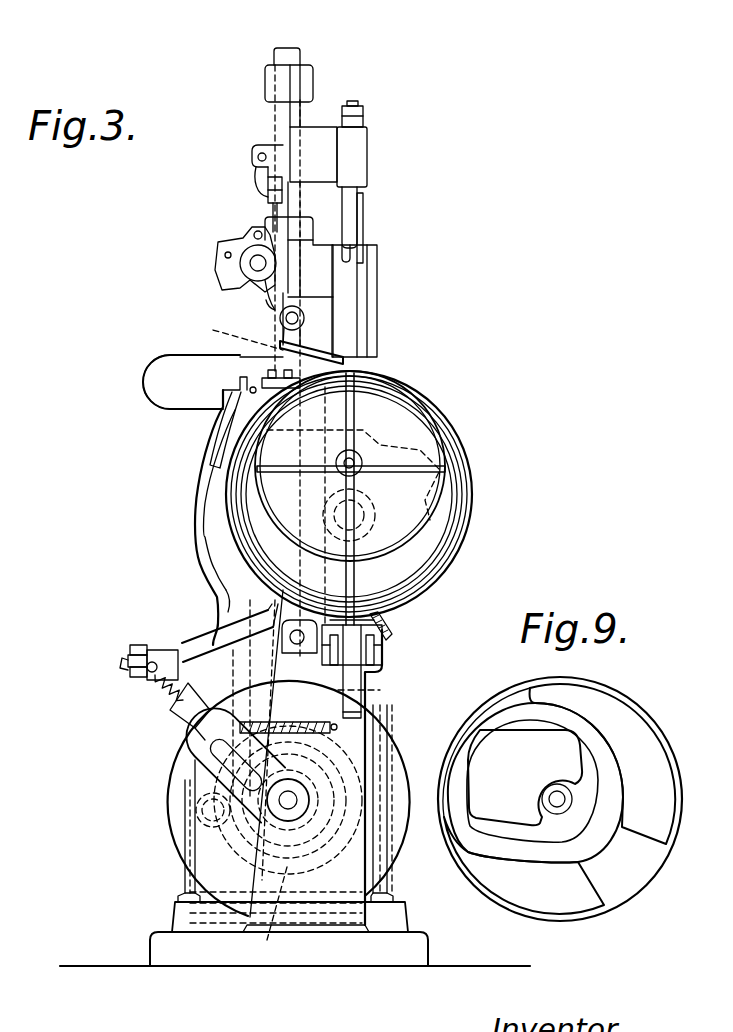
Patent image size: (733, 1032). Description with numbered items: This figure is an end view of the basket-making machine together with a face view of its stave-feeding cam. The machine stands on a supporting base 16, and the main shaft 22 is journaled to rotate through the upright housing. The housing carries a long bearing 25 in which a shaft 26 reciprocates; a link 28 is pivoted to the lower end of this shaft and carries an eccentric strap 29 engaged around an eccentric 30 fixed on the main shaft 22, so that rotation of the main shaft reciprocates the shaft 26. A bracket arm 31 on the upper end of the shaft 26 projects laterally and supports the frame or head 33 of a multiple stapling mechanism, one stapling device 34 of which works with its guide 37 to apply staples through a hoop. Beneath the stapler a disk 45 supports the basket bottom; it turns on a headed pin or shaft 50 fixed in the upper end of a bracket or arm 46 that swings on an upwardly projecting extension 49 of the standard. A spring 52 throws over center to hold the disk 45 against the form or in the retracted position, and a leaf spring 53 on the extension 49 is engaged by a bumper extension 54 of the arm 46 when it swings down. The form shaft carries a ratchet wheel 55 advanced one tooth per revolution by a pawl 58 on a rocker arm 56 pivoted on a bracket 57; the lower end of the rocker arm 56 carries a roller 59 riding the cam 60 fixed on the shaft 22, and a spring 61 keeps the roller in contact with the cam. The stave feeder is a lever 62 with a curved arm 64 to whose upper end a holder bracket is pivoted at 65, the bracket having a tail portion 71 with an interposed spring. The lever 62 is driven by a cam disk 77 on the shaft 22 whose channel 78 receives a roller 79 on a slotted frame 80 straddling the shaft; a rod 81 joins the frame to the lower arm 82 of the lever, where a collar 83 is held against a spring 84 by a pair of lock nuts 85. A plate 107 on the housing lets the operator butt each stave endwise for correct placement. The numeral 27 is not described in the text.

In FIG. 3, the supporting base 16 is at (353, 968).
In FIG. 3, the main shaft 22 is at (290, 800).
In FIG. 3, the long bearing 25 is at (267, 322).
In FIG. 3, the shaft 26 is at (300, 56).
In FIG. 3, the pin 27 is at (380, 692).
In FIG. 3, the link 28 is at (312, 787).
In FIG. 3, the eccentric strap 29 is at (330, 855).
In FIG. 3, the eccentric 30 is at (272, 912).
In FIG. 3, the bracket arm 31 is at (300, 82).
In FIG. 3, the frame or head 33 is at (326, 160).
In FIG. 3, the stapling device 34 is at (352, 224).
In FIG. 3, the guide 37 is at (372, 304).
In FIG. 3, the disk 45 is at (425, 428).
In FIG. 3, the bracket or arm 46 is at (366, 528).
In FIG. 3, the extension 49 is at (372, 742).
In FIG. 3, the headed pin or shaft 50 is at (355, 458).
In FIG. 3, the spring 52 is at (386, 640).
In FIG. 3, the leaf spring 53 is at (370, 682).
In FIG. 3, the bumper extension 54 is at (362, 657).
In FIG. 3, the ratchet wheel 55 is at (432, 505).
In FIG. 3, the rocker arm 56 is at (212, 590).
In FIG. 3, the bracket 57 is at (246, 753).
In FIG. 3, the pawl 58 is at (348, 412).
In FIG. 3, the roller 59 is at (205, 830).
In FIG. 3, the cam 60 is at (288, 800).
In FIG. 3, the spring 61 is at (288, 709).
In FIG. 3, the lever 62 is at (214, 606).
In FIG. 3, the curved arm 64 is at (200, 522).
In FIG. 3, the pivot 65 is at (221, 382).
In FIG. 3, the tail portion 71 is at (345, 363).
In FIG. 3, the cam disk 77 is at (410, 757).
In FIG. 9, the cam disk 77 is at (593, 921).
In FIG. 9, the channel 78 is at (530, 845).
In FIG. 3, the roller 79 is at (205, 735).
In FIG. 3, the slotted frame 80 is at (215, 767).
In FIG. 3, the rod 81 is at (138, 645).
In FIG. 3, the lower arm 82 is at (179, 682).
In FIG. 3, the collar 83 is at (135, 672).
In FIG. 3, the spring 84 is at (172, 705).
In FIG. 3, the lock nuts 85 is at (153, 660).
In FIG. 3, the plate 107 is at (155, 412).